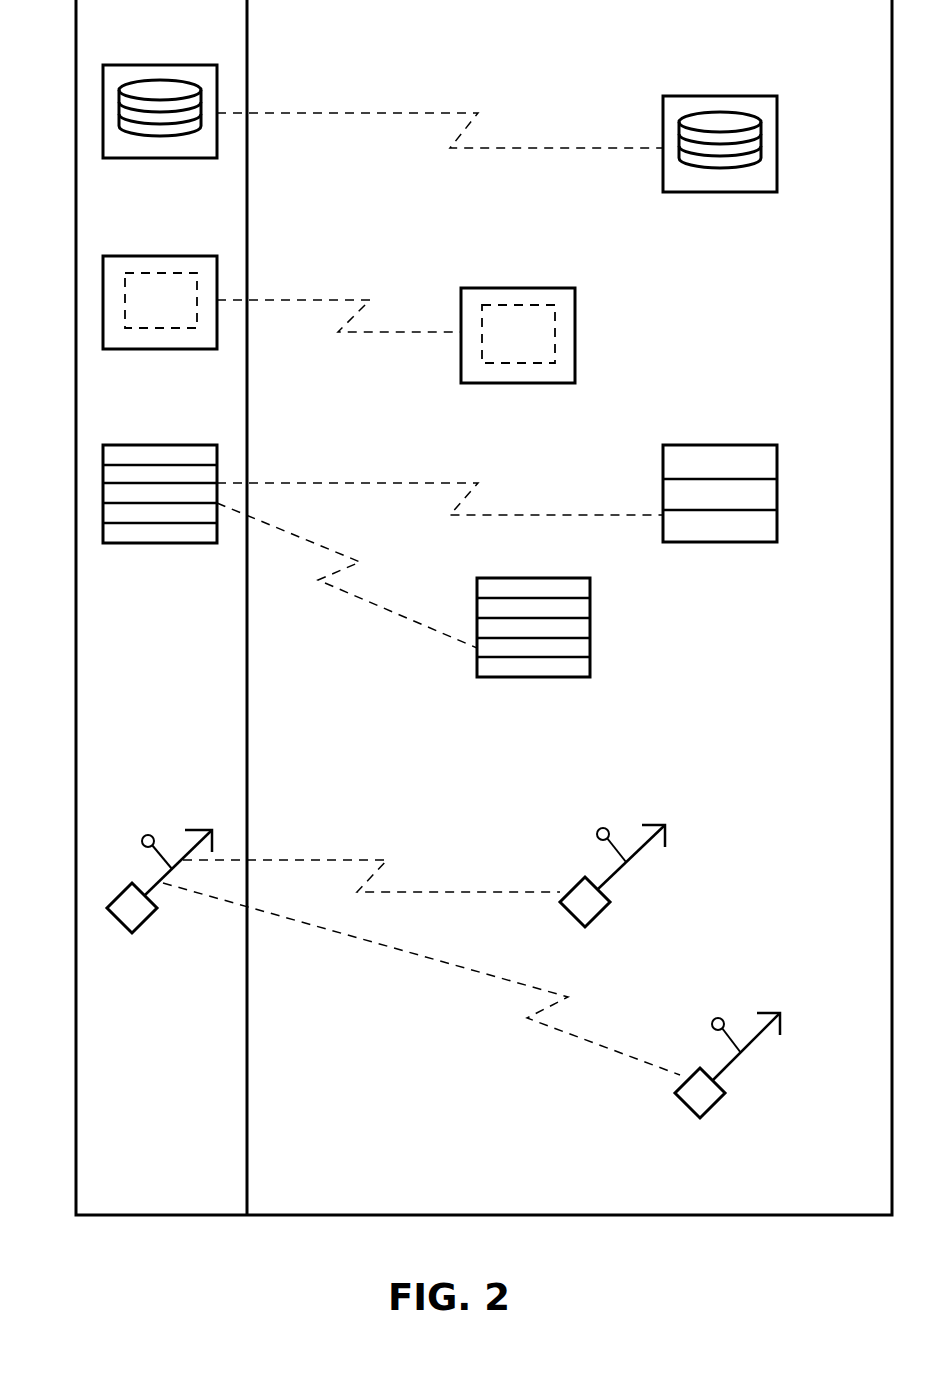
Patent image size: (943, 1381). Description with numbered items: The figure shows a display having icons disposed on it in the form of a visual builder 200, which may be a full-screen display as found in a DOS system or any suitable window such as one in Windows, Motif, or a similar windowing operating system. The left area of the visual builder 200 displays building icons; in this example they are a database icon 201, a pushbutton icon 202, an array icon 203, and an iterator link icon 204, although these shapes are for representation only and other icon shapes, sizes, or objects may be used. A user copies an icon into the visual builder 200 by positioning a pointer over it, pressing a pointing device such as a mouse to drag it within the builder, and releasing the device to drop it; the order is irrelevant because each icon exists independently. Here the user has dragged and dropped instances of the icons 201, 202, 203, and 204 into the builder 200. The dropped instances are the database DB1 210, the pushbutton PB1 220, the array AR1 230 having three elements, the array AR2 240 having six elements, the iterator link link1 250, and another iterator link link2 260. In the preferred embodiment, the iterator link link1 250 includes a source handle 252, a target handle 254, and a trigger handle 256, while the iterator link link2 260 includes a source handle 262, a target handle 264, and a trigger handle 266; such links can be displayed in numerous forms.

The visual builder 200 is at (593, 52).
The database icon 201 is at (120, 98).
The pushbutton icon 202 is at (123, 290).
The array icon 203 is at (122, 483).
The iterator link icon 204 is at (122, 907).
The database DB1 210 is at (760, 122).
The pushbutton PB1 220 is at (553, 320).
The array AR1 230 is at (760, 467).
The array AR2 240 is at (580, 648).
The iterator link link1 250 is at (627, 841).
The source handle 252 is at (600, 915).
The target handle 254 is at (643, 824).
The trigger handle 256 is at (597, 830).
The iterator link link2 260 is at (744, 1046).
The source handle 262 is at (712, 1108).
The target handle 264 is at (760, 1013).
The trigger handle 266 is at (712, 1020).